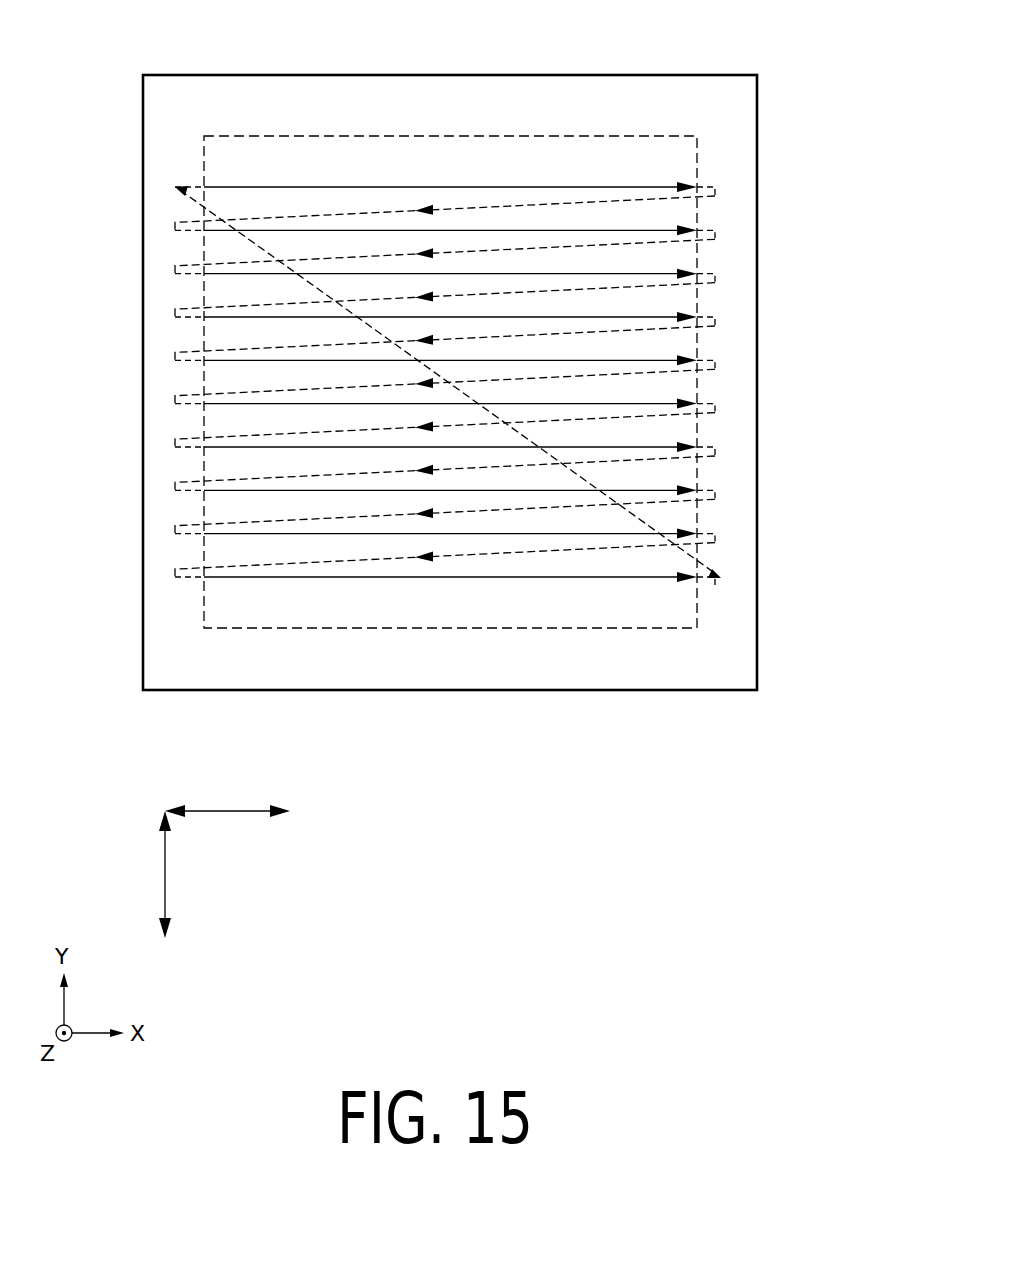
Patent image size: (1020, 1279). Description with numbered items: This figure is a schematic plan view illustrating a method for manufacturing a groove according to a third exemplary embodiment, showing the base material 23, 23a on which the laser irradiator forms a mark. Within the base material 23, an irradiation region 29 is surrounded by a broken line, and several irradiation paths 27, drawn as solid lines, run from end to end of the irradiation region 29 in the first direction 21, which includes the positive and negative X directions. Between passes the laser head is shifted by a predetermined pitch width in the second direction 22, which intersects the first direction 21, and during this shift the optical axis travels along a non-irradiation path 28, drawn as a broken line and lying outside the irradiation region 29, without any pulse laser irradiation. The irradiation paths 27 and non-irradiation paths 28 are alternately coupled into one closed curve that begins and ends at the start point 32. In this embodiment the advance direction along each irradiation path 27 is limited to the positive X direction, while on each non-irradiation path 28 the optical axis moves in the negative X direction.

The first direction 21 is at (228, 810).
The second direction 22 is at (163, 873).
The base material 23 is at (463, 349).
The substrate surface 23a is at (715, 93).
The irradiation path 27 is at (522, 185).
The non-irradiation path 28 is at (717, 232).
The irradiation region 29 is at (620, 135).
The start point 32 is at (203, 185).